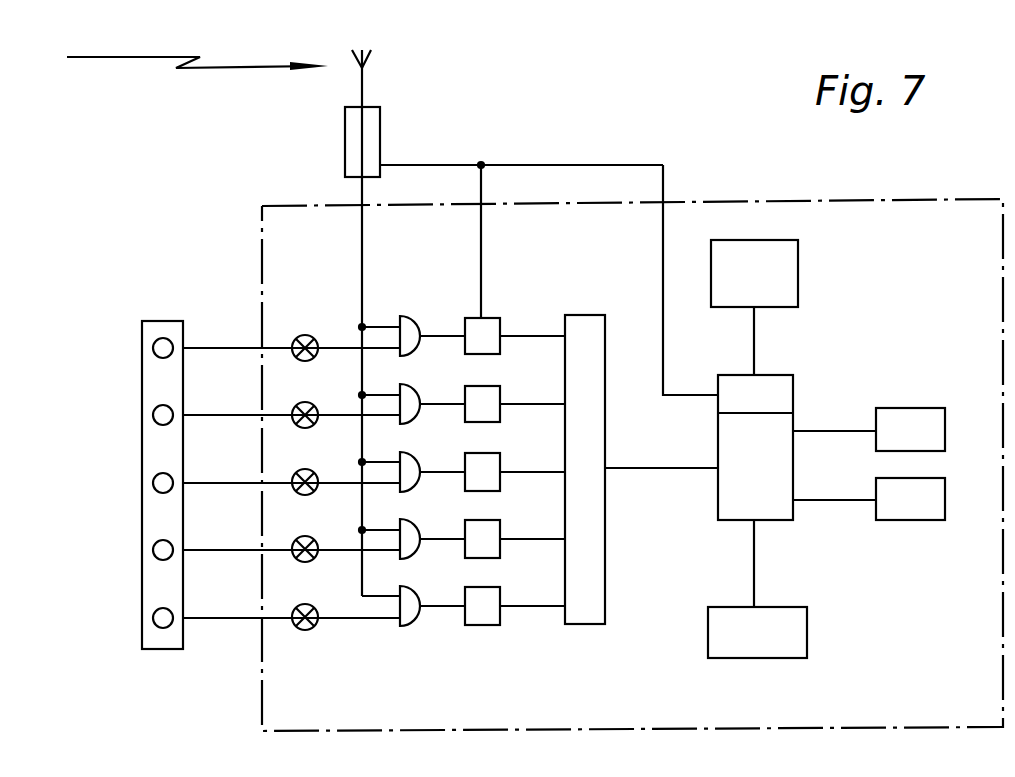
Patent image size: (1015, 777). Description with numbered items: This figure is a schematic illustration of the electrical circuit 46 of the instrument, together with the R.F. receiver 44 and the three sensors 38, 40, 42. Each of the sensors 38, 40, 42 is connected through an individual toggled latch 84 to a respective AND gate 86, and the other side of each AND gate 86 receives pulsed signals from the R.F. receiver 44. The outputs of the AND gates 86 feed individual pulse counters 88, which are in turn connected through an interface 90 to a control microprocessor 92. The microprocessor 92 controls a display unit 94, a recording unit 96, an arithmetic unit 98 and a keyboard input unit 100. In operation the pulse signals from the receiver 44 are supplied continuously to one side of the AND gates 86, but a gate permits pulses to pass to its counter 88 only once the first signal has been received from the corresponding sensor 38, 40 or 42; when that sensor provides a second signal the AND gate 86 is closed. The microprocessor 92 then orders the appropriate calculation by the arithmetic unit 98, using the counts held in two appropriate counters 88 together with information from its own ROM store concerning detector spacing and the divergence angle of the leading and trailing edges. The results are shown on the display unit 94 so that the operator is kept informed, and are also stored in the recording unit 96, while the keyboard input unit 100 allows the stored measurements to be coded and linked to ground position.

The sensor 38 is at (150, 352).
The sensor 40 is at (150, 418).
The sensor 42 is at (150, 486).
The R.F. receiver 44 is at (380, 135).
The electrical circuit 46 is at (768, 200).
The toggled latch 84 is at (309, 360).
The AND gate 86 is at (411, 353).
The pulse counter 88 is at (499, 350).
The interface 90 is at (587, 315).
The control microprocessor 92 is at (718, 432).
The display unit 94 is at (799, 266).
The recording unit 96 is at (808, 632).
The arithmetic unit 98 is at (909, 408).
The keyboard input unit 100 is at (925, 521).